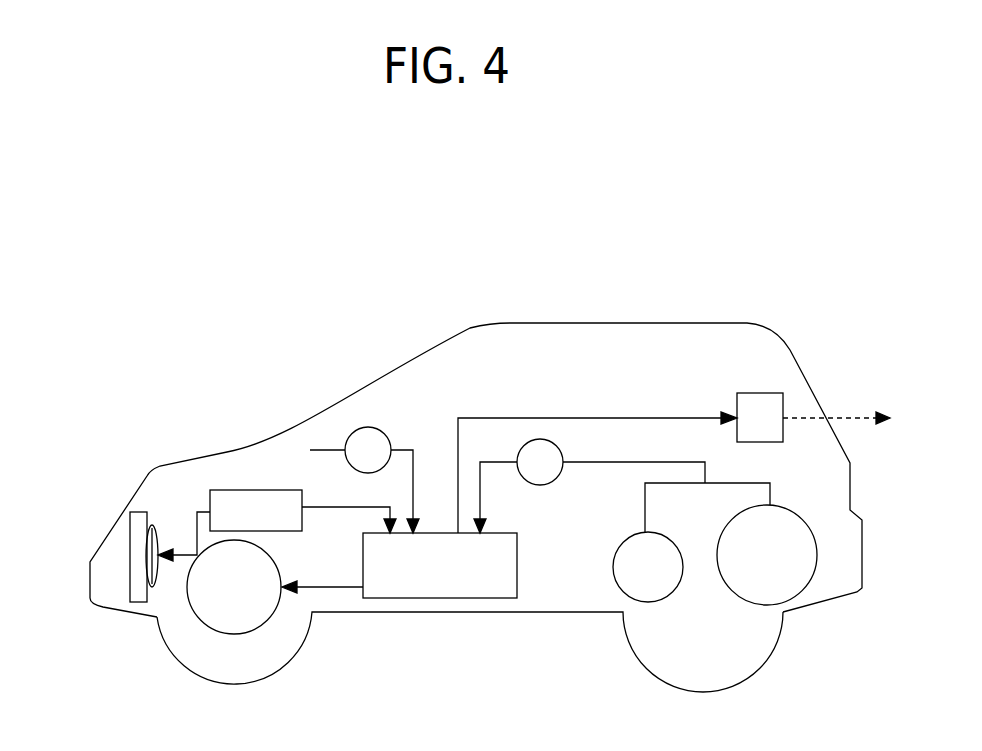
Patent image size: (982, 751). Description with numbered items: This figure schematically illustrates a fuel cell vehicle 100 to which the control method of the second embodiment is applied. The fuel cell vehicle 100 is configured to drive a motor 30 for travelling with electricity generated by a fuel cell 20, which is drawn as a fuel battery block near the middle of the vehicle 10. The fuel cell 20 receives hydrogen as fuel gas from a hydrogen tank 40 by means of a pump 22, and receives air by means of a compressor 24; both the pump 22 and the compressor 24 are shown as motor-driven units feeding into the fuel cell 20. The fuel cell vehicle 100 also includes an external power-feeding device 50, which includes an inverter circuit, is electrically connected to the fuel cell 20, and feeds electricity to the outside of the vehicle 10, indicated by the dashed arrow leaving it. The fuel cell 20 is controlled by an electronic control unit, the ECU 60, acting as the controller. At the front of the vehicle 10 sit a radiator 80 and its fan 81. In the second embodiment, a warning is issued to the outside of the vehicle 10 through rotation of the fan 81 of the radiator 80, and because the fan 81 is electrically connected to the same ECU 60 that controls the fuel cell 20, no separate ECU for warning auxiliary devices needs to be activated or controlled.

The fuel cell vehicle 100 is at (218, 264).
The vehicle 10 is at (685, 323).
The fuel cell 20 is at (440, 598).
The pump 22 is at (538, 440).
The compressor 24 is at (353, 432).
The motor 30 is at (260, 623).
The hydrogen tank 40 is at (682, 583).
The external power-feeding device 50 is at (763, 393).
The electronic control unit (ECU) 60 is at (252, 490).
The radiator 80 is at (127, 523).
The fan 81 is at (158, 617).